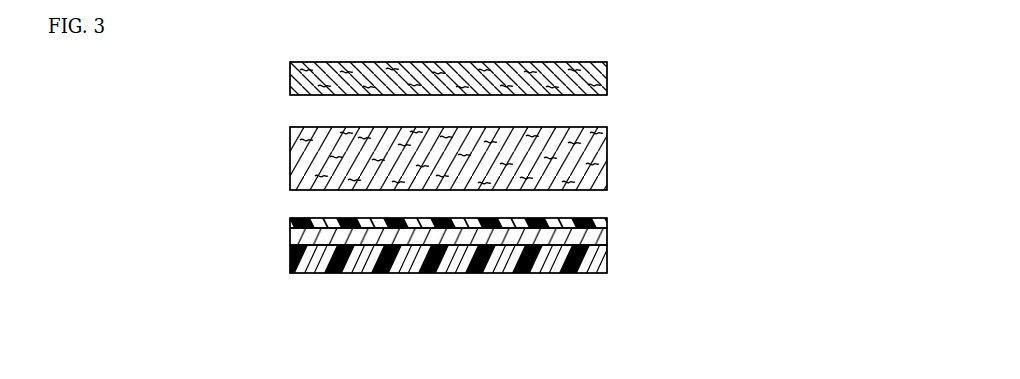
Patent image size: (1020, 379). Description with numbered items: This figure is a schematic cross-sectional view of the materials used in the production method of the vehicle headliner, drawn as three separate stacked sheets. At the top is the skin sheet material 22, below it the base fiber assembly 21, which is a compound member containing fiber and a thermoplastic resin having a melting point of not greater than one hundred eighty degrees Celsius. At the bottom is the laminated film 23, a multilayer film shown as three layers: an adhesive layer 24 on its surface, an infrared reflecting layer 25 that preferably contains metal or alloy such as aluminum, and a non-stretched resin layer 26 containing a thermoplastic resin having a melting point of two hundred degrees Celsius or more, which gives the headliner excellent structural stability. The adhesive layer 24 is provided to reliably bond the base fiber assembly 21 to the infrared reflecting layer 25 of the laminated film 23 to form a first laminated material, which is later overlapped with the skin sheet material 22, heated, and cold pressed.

The base fiber assembly 21 is at (607, 165).
The skin sheet material 22 is at (607, 86).
The laminated film 23 is at (461, 243).
The adhesive layer 24 is at (290, 222).
The infrared reflecting layer 25 is at (297, 238).
The non-stretched resin layer 26 is at (292, 250).